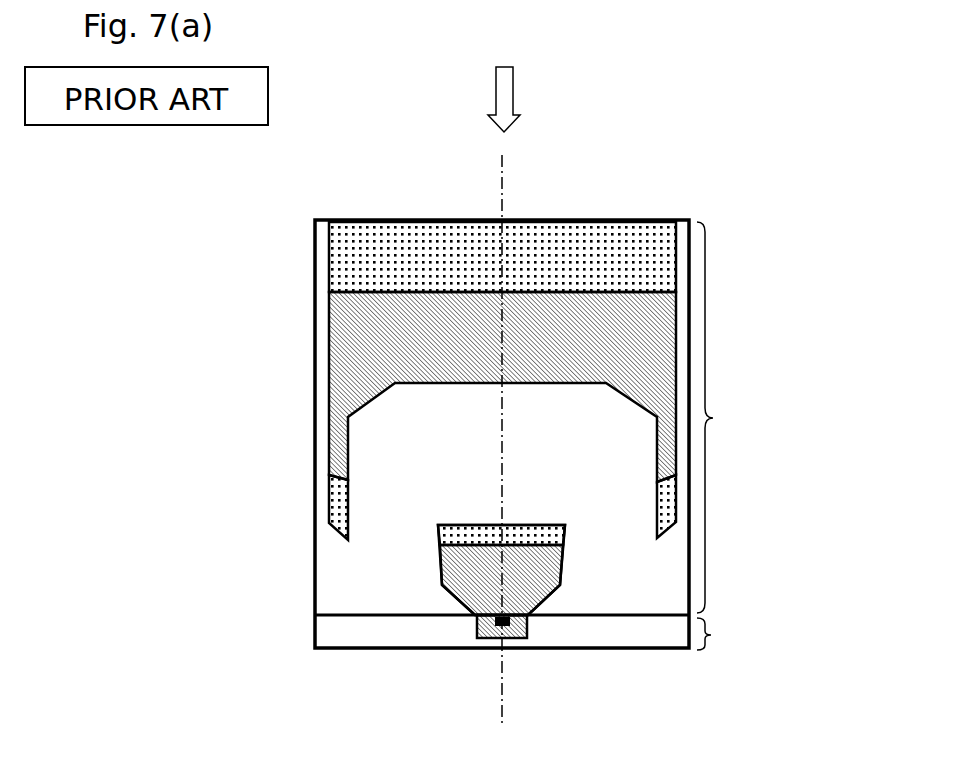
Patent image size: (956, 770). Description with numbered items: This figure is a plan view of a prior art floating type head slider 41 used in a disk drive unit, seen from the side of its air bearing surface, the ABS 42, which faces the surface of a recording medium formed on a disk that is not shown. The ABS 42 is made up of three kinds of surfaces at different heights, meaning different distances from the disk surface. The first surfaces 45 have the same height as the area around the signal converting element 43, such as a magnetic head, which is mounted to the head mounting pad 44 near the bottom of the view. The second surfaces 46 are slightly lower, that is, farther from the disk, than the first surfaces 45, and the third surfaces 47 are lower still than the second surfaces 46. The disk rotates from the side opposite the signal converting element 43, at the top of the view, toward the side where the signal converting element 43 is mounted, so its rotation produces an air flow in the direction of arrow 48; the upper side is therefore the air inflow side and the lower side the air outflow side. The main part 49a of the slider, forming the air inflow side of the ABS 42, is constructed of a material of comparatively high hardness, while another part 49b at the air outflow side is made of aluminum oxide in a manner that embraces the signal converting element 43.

The head slider 41 is at (619, 158).
The ABS 42 is at (429, 207).
The signal converting element 43 is at (508, 627).
The head mounting pad 44 is at (485, 587).
The first surfaces 45 is at (515, 625).
The second surfaces 46 is at (475, 535).
The third surfaces 47 is at (415, 633).
The arrow 48 is at (498, 93).
The main part 49a is at (737, 417).
The another part 49b is at (739, 635).